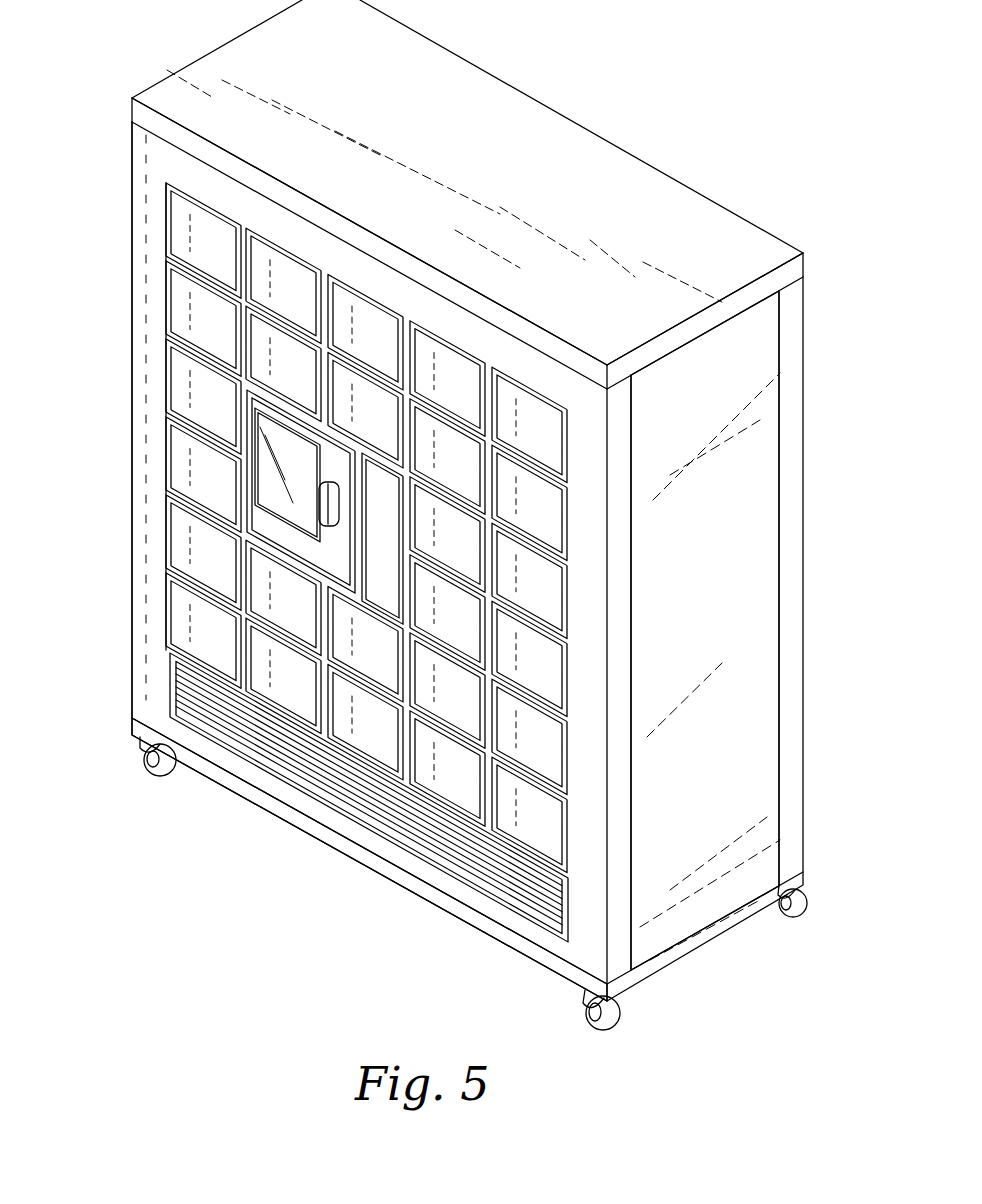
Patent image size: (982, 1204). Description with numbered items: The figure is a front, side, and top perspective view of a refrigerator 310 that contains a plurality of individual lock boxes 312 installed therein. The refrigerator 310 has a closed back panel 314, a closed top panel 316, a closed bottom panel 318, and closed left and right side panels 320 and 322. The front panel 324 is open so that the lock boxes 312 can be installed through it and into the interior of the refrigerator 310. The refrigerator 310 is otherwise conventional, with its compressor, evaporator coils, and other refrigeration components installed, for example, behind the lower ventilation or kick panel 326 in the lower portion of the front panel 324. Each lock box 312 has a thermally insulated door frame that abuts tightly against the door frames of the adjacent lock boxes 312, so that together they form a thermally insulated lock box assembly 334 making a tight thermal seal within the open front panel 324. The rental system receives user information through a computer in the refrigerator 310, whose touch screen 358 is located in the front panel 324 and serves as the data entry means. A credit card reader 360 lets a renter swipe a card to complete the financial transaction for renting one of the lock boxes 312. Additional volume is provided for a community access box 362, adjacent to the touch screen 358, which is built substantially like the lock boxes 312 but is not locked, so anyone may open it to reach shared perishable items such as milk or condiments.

The refrigerator 310 is at (168, 920).
The individual lock boxes 312 is at (430, 330).
The closed back panel 314 is at (685, 222).
The closed top panel 316 is at (402, 91).
The closed bottom panel 318 is at (467, 895).
The closed left side panel 320 is at (147, 528).
The closed right side panel 322 is at (740, 759).
The front panel 324 is at (593, 918).
The lower ventilation or kick panel 326 is at (240, 737).
The thermally insulated lock box assembly 334 is at (155, 616).
The touch screen 358 is at (314, 476).
The credit card reader 360 is at (322, 510).
The community access box 362 is at (400, 512).